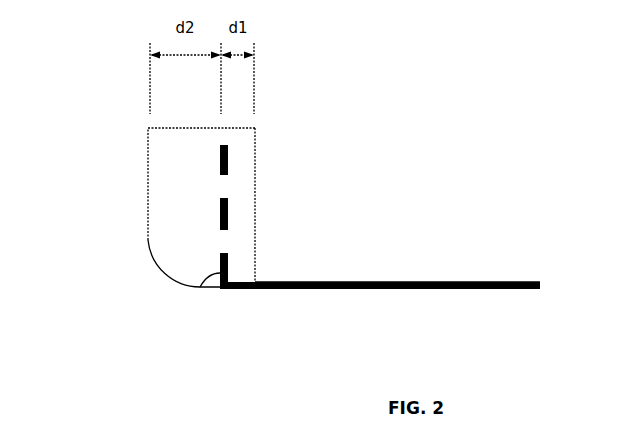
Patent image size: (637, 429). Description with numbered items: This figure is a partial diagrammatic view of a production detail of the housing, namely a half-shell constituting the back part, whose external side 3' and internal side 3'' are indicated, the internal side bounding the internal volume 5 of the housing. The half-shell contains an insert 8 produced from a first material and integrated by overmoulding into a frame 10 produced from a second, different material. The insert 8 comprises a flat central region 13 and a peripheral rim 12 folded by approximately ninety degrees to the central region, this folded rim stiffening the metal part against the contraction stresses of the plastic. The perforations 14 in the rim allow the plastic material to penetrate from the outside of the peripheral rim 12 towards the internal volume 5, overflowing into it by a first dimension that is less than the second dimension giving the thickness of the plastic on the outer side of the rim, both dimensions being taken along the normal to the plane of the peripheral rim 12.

The external side 3' is at (141, 184).
The internal side 3'' is at (288, 185).
The internal volume 5 is at (428, 202).
The insert 8 is at (343, 292).
The frame 10 is at (162, 250).
The peripheral rim 12 is at (202, 287).
The flat central region 13 is at (415, 280).
The weld seams 14 is at (228, 238).